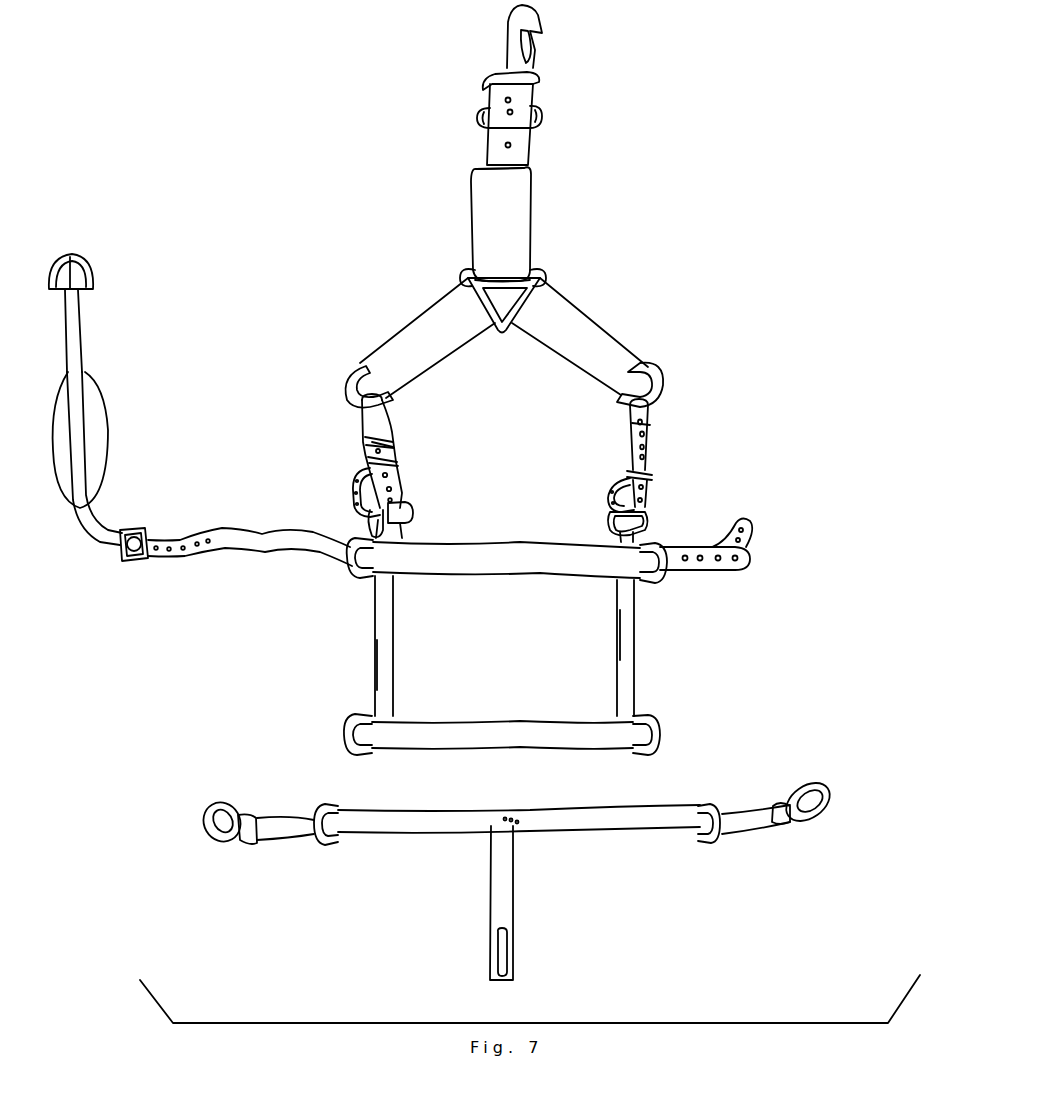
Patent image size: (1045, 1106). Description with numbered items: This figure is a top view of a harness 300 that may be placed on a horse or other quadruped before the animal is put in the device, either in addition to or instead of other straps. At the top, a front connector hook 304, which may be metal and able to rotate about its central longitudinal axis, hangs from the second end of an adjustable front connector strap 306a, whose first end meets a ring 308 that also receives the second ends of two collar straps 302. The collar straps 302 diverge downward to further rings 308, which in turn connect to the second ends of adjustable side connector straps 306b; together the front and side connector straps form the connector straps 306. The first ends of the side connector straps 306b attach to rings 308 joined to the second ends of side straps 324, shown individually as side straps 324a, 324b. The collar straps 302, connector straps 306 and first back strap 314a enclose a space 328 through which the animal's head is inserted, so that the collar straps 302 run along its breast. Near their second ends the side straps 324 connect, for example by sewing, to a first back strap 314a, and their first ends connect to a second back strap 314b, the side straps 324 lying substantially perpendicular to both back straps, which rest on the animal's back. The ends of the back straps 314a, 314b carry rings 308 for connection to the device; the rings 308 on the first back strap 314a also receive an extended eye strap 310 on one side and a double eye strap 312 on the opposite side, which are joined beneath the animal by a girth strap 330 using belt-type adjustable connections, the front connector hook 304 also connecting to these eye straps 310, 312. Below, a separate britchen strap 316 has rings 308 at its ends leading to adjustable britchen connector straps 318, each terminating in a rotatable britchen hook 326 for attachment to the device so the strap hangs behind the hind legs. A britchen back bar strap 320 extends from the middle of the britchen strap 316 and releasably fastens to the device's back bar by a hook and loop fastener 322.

The harness 300 is at (833, 234).
The collar straps 302 is at (556, 300).
The hooks 304 is at (526, 19).
The connector straps 306 is at (486, 239).
The front connector strap 306a is at (520, 181).
The side connector straps 306b is at (366, 433).
The rings 308 is at (546, 272).
The eye strap 310 is at (185, 560).
The eye strap 312 is at (746, 558).
The first back strap 314a is at (583, 566).
The second back strap 314b is at (596, 741).
The britchen strap 316 is at (615, 824).
The britchen connector straps 318 is at (296, 826).
The britchen back bar strap 320 is at (500, 905).
The fastener 322 is at (507, 957).
The side straps 324 is at (385, 660).
The side strap 324a is at (385, 693).
The side strap 324b is at (625, 634).
The britchen hooks 326 is at (240, 840).
The space 328 is at (555, 427).
The girth strap 330 is at (78, 342).